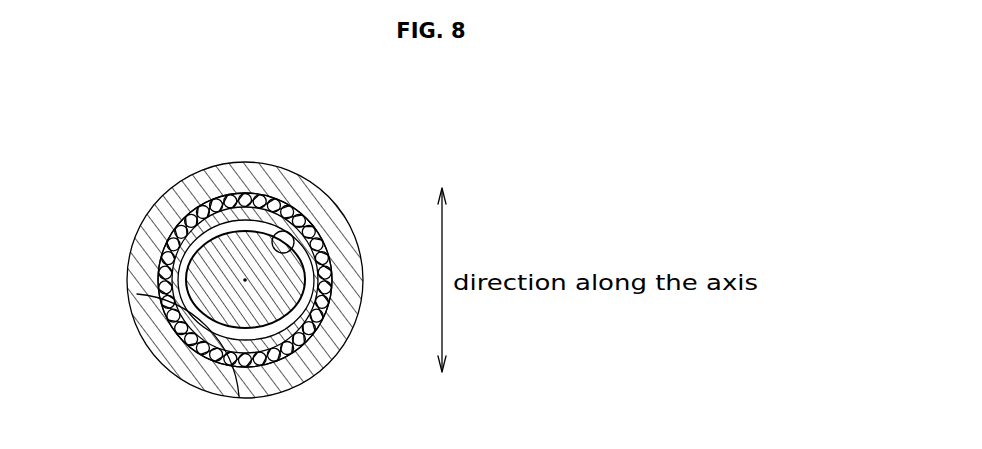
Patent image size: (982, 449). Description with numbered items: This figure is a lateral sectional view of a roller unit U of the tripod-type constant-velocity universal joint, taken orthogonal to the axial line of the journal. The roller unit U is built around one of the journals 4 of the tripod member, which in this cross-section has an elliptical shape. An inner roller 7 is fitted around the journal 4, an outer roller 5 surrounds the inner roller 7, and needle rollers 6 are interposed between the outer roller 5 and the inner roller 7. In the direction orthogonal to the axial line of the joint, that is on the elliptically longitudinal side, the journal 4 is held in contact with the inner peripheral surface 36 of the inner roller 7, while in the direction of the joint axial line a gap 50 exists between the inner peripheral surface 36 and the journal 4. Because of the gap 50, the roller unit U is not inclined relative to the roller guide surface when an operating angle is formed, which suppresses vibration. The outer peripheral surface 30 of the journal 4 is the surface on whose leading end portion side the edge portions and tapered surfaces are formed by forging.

The journal 4 is at (293, 279).
The outer roller 5 is at (245, 261).
The needle rollers 6 is at (214, 280).
The inner roller 7 is at (282, 280).
The outer peripheral surface 30 is at (245, 242).
The inner peripheral surface 36 is at (303, 196).
The gap 50 is at (245, 245).
The roller unit U is at (350, 178).